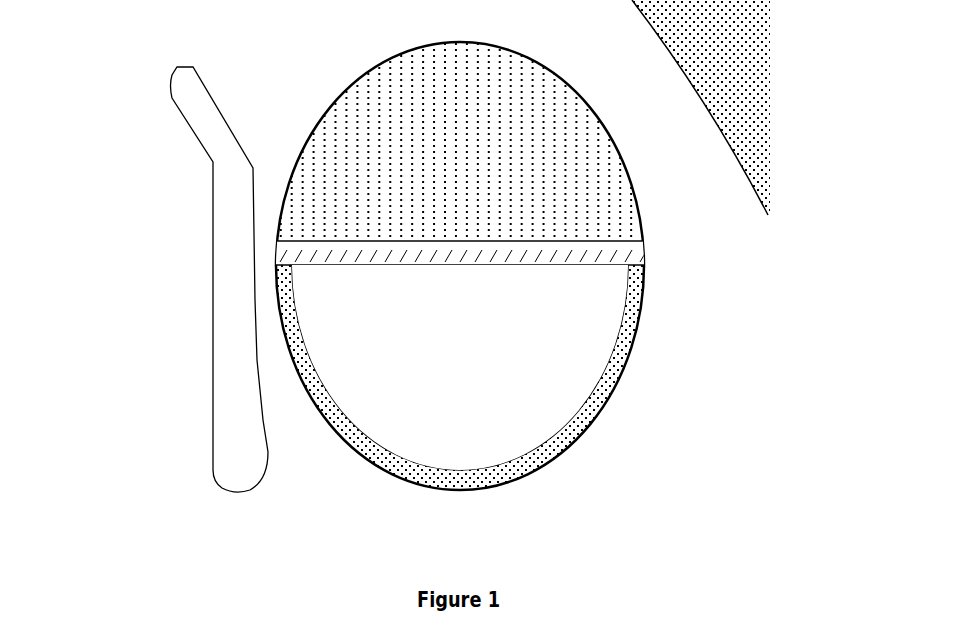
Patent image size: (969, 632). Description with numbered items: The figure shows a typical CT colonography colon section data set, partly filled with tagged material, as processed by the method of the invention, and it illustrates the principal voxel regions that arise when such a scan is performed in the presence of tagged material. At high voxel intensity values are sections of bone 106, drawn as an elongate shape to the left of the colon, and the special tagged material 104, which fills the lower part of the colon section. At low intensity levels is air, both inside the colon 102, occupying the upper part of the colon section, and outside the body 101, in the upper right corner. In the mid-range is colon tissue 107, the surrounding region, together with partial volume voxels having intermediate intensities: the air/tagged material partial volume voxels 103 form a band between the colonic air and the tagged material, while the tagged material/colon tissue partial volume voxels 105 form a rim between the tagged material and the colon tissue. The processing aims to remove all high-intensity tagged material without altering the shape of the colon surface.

The air outside the body 101 is at (720, 27).
The air inside the colon 102 is at (470, 155).
The air/tagged material partial volume voxels 103 is at (545, 256).
The tagged material 104 is at (485, 345).
The tagged material/colon tissue partial volume voxels 105 is at (567, 437).
The bone 106 is at (237, 303).
The colon tissue 107 is at (258, 35).